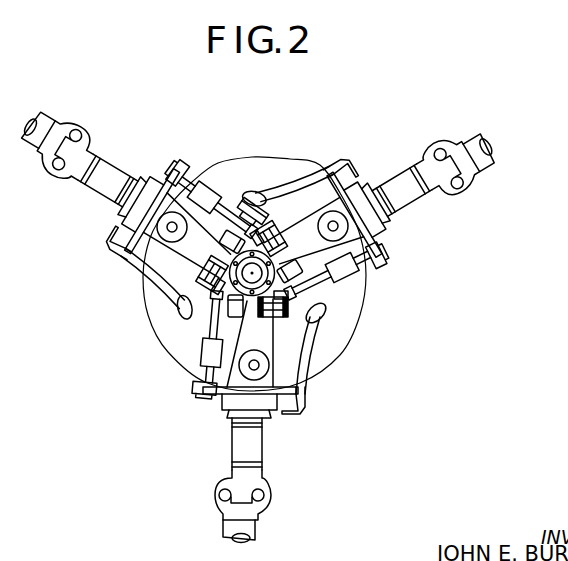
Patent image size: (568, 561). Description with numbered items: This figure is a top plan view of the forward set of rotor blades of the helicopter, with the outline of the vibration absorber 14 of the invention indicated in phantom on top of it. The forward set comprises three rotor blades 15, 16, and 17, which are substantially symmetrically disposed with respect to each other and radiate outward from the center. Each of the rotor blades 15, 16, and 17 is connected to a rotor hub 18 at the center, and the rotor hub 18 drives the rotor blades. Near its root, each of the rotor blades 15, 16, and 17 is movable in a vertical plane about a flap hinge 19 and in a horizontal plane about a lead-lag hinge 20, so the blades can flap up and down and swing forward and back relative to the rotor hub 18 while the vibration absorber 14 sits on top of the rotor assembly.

The vibration absorber 14 is at (354, 313).
The rotor blade 15 is at (290, 416).
The rotor blade 16 is at (392, 193).
The rotor blade 17 is at (50, 122).
The rotor hub 18 is at (260, 300).
The flap hinge 19 is at (247, 208).
The lead-lag hinge 20 is at (349, 231).